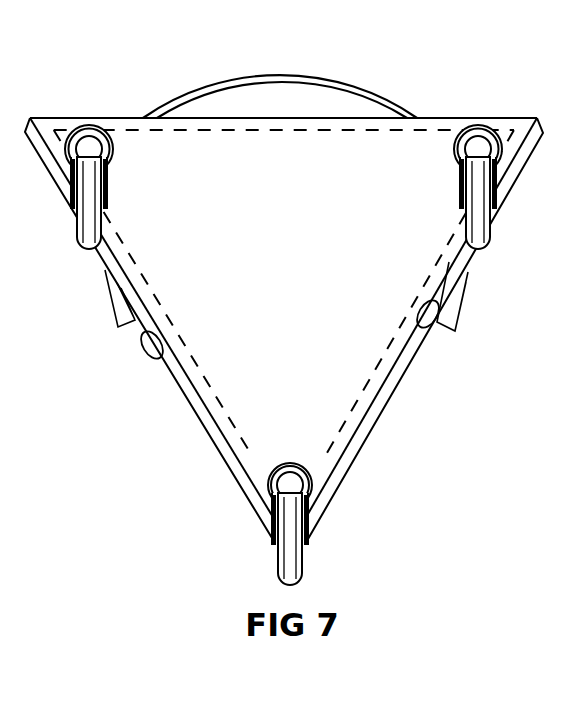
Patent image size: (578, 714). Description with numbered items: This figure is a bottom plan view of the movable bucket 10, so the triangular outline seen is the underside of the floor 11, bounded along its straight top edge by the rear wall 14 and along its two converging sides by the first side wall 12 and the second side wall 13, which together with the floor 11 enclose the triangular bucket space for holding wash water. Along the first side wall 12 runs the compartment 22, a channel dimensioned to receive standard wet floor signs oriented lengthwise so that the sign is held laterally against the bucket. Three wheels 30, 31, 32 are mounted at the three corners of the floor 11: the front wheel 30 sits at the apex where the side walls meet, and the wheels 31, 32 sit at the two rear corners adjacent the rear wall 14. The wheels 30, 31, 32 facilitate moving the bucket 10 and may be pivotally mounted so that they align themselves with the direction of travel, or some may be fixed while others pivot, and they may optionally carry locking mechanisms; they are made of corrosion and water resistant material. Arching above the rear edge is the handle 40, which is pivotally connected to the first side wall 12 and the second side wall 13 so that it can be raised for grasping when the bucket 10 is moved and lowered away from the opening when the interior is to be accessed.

The movable bucket 10 is at (160, 412).
The floor 11 is at (315, 289).
The first side wall 12 is at (430, 303).
The second side wall 13 is at (172, 320).
The rear wall 14 is at (290, 120).
The compartment 22 is at (52, 174).
The wheel 30 is at (292, 565).
The wheel 31 is at (478, 207).
The wheel 32 is at (92, 220).
The handle 40 is at (292, 74).